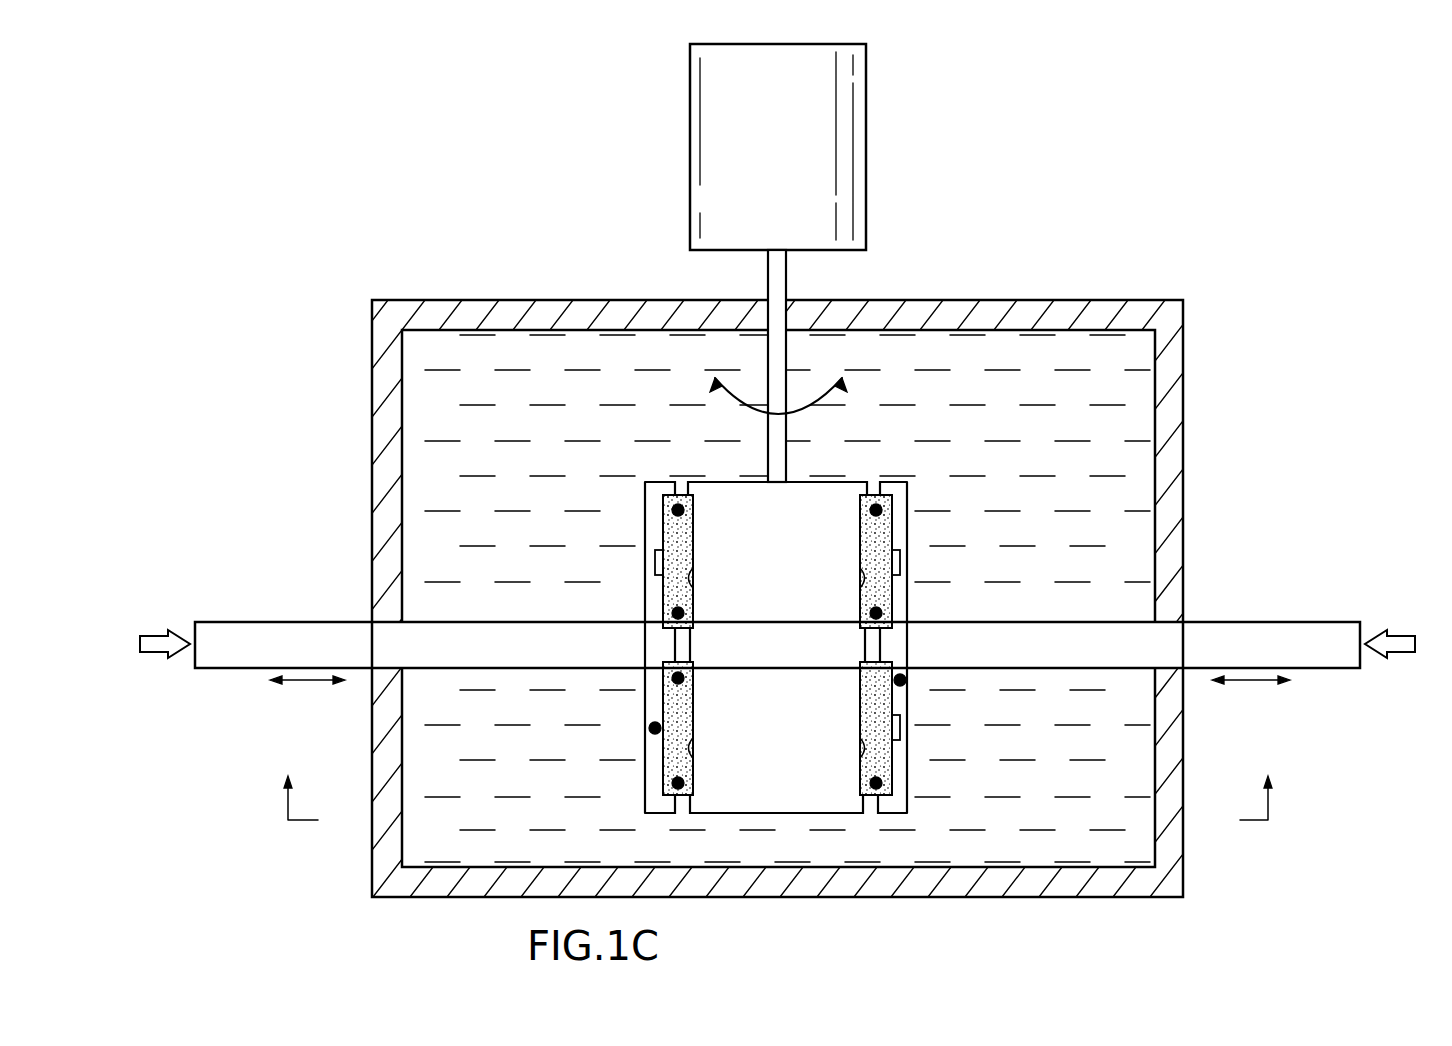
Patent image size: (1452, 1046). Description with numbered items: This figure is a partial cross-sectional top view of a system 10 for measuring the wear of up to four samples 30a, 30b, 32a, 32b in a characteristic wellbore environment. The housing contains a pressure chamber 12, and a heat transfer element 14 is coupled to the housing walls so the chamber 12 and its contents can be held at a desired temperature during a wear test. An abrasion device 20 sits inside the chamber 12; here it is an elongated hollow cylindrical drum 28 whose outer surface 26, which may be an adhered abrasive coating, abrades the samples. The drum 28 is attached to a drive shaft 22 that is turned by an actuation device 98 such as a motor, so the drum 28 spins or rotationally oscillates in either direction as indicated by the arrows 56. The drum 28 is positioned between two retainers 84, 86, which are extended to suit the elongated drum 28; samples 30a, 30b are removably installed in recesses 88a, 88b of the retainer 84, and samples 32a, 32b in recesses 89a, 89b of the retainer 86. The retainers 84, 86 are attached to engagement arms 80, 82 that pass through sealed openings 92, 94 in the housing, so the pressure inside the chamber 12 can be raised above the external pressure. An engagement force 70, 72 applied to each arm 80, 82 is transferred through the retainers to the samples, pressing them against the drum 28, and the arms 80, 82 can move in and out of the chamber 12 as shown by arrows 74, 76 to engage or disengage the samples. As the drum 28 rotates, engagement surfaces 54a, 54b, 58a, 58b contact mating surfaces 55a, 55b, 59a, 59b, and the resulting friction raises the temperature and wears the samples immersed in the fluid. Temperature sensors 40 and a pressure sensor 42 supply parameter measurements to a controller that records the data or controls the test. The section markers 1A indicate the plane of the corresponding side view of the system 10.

The system 10 is at (1180, 195).
The pressure chamber 12 is at (479, 337).
The heat transfer element 14 is at (1180, 366).
The abrasion device 20 is at (804, 671).
The drive shaft 22 is at (786, 272).
The outer surface 26 is at (826, 511).
The drum 28 is at (785, 812).
The sample 30a is at (663, 526).
The sample 30b is at (663, 710).
The sample 32a is at (893, 505).
The sample 32b is at (893, 745).
The temperature sensor 40 is at (684, 510).
The pressure sensor 42 is at (655, 560).
The engagement surface 54a is at (694, 538).
The engagement surface 54b is at (694, 706).
The engagement surface 55a is at (694, 582).
The engagement surface 55b is at (694, 752).
The rotation arrows 56 is at (832, 398).
The engagement surface 58a is at (860, 532).
The engagement surface 58b is at (860, 682).
The engagement surface 59a is at (860, 578).
The engagement surface 59b is at (860, 751).
The engagement force 70 is at (158, 662).
The engagement force 72 is at (1388, 660).
The movement arrows 74 is at (305, 684).
The movement arrows 76 is at (1265, 684).
The engagement arm 80 is at (504, 640).
The engagement arm 82 is at (1043, 655).
The retainer 84 is at (655, 796).
The retainer 86 is at (905, 800).
The recess 88a is at (682, 488).
The recess 88b is at (683, 800).
The recess 89a is at (875, 487).
The recess 89b is at (876, 800).
The opening 92 is at (372, 623).
The opening 94 is at (1183, 623).
The actuation device 98 is at (867, 140).
The section view indicator 1A is at (782, 783).